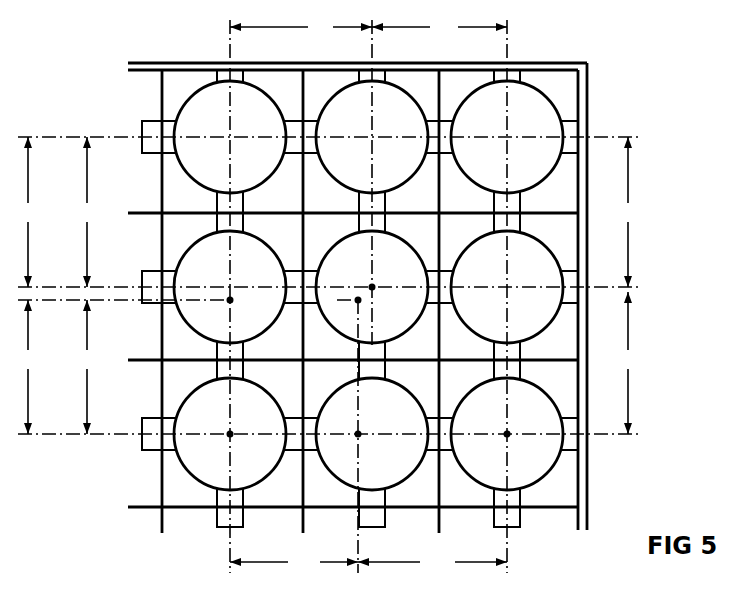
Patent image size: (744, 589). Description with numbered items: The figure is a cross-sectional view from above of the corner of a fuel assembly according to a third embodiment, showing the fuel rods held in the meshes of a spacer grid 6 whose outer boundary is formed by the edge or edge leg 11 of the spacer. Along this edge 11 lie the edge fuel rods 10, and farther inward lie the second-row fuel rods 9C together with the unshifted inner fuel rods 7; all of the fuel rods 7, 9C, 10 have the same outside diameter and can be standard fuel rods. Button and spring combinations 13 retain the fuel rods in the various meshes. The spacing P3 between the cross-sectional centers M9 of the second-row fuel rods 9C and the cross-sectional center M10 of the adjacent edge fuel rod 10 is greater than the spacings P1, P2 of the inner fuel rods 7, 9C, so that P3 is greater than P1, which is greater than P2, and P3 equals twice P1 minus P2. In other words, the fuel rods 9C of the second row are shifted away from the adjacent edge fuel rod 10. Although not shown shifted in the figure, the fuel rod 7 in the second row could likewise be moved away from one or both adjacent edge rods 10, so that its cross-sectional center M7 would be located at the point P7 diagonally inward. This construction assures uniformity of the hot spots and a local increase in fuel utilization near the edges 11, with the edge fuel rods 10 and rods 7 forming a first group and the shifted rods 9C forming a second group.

The grid frame 6 is at (160, 520).
The fuel rod 7 is at (398, 243).
The fuel rod of the second row 9C is at (195, 258).
The edge fuel rod 10 is at (210, 98).
The edge leg of the spacer 11 is at (536, 42).
The button and spring combination 13 is at (232, 232).
The cross-sectional center of the fuel rod 7 M7 is at (372, 287).
The cross-sectional center of the fuel rod 9C M9 is at (230, 300).
The cross-sectional center of the edge fuel rod 10 M10 is at (507, 434).
The point P7 is at (360, 302).
The spacing P1 is at (328, 226).
The spacing P2 is at (216, 436).
The spacing P3 is at (291, 354).